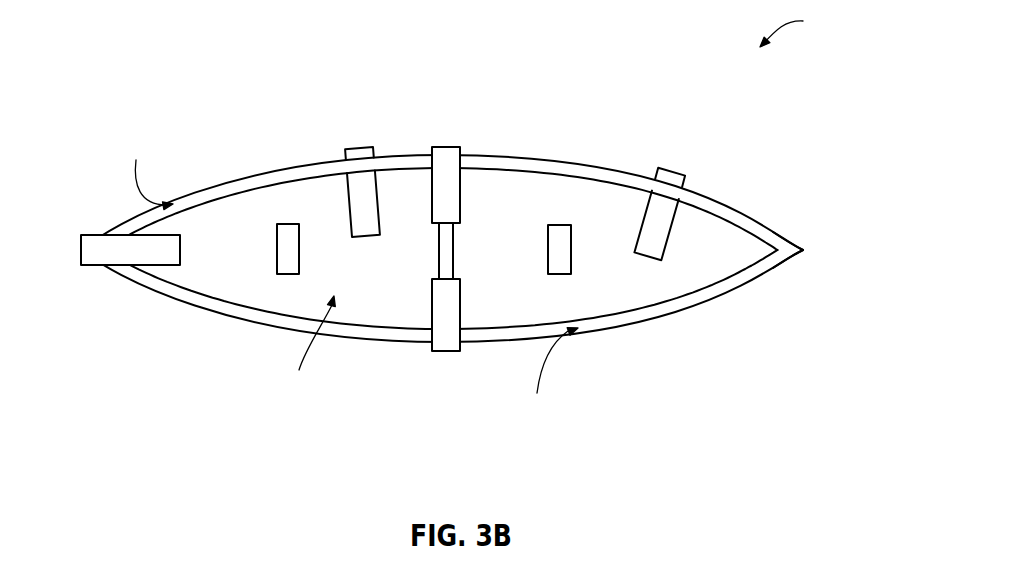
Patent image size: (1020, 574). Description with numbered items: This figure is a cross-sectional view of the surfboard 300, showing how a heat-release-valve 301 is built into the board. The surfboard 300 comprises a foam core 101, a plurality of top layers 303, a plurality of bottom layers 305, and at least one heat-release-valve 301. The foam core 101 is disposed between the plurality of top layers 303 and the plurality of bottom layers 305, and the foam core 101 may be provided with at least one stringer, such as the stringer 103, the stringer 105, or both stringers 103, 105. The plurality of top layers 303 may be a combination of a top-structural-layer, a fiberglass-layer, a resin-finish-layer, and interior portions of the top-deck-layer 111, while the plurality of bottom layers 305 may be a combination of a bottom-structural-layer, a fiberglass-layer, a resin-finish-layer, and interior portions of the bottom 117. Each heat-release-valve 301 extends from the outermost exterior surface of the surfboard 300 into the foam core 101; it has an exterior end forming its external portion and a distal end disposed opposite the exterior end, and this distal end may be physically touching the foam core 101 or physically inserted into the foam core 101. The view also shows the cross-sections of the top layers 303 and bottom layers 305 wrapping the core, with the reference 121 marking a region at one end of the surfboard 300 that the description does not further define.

The surfboard 300 is at (802, 29).
The heat-release-valve 301 is at (357, 147).
The plurality of top layers 303 is at (146, 173).
The plurality of bottom layers 305 is at (550, 376).
The foam core 101 is at (309, 349).
The stringer 103 is at (453, 250).
The stringer 105 is at (277, 253).
The top-deck-layer 111 is at (236, 178).
The bottom 117 is at (663, 323).
The end 121 is at (803, 249).